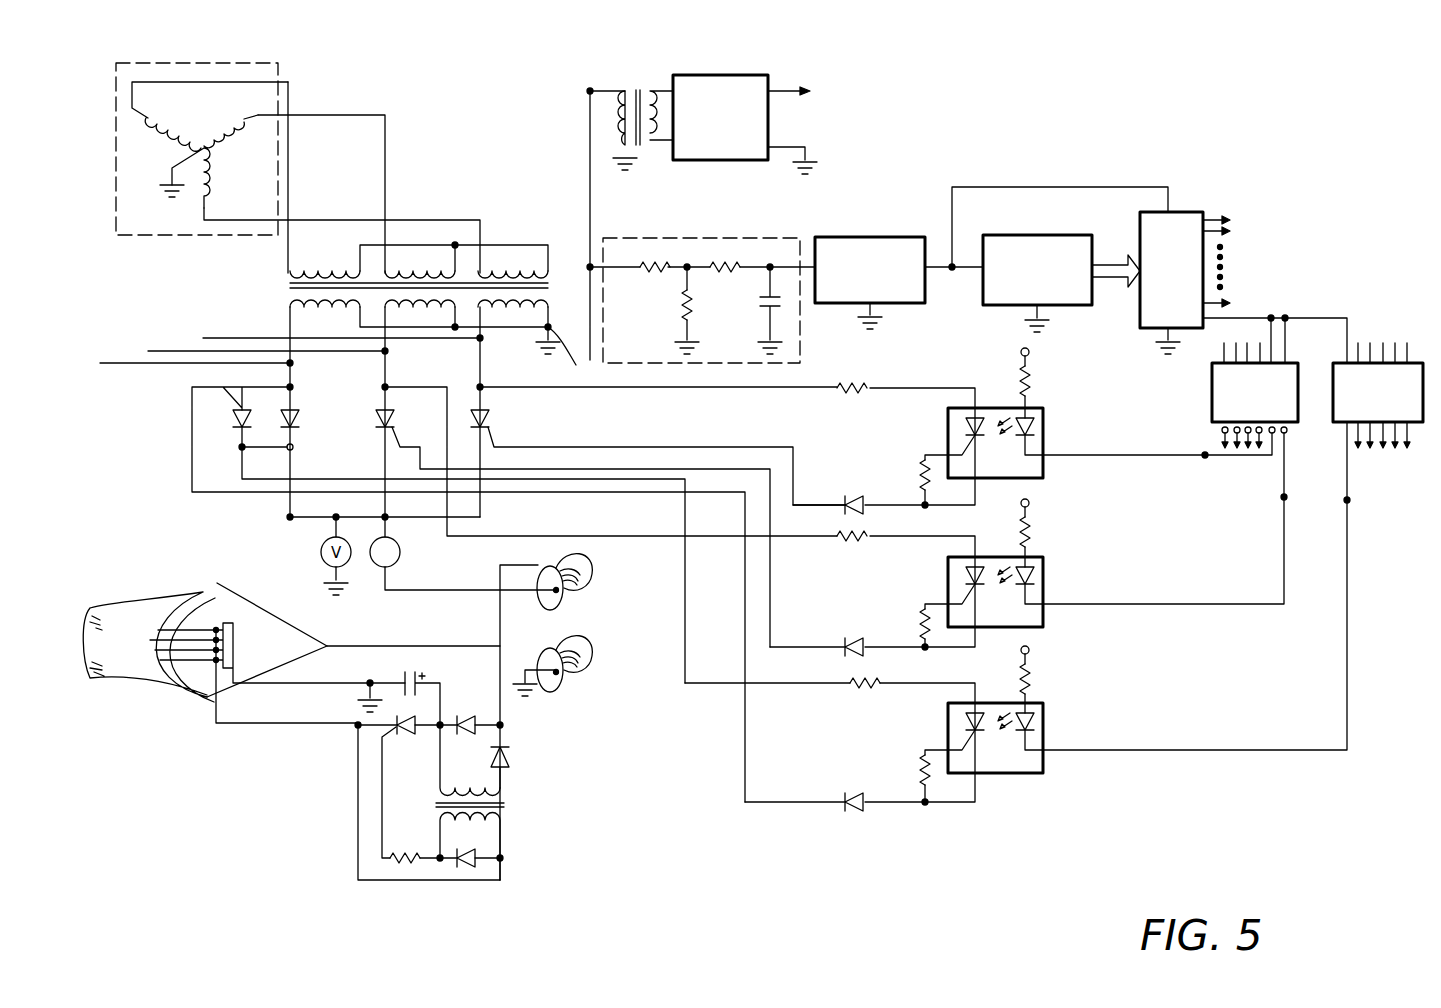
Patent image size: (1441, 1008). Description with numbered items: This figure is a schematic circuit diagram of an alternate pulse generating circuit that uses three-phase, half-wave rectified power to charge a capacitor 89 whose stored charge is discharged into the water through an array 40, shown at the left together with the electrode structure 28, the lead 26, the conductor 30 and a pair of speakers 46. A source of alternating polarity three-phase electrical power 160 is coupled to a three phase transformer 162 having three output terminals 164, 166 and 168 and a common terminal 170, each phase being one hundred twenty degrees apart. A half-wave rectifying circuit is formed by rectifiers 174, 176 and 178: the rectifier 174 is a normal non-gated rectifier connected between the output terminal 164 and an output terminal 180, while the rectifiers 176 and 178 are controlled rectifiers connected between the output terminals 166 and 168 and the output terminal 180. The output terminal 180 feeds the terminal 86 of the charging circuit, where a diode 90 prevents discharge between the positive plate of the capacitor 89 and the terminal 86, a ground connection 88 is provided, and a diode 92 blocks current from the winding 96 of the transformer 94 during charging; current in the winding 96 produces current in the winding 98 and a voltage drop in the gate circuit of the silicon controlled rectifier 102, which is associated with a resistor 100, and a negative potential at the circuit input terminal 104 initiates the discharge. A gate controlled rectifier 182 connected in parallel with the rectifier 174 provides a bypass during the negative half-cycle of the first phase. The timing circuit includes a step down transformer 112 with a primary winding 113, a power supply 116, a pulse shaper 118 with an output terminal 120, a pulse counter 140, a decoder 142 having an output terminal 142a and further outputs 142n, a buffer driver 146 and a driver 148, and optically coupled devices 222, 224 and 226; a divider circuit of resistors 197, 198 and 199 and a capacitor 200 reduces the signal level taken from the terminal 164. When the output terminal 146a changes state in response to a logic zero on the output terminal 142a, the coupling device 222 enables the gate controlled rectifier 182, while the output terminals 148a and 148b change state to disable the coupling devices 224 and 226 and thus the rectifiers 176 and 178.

The lower electrode lead 26 is at (276, 648).
The electrode assembly 28 is at (240, 596).
The conductor 30 is at (470, 646).
The array 40 is at (186, 625).
The speaker 46 is at (500, 565).
The terminal 86 is at (505, 725).
The ground connection 88 is at (371, 680).
The capacitor 89 is at (418, 670).
The diode 90 is at (478, 694).
The diode 92 is at (512, 760).
The transformer 94 is at (506, 804).
The primary winding 96 is at (472, 788).
The secondary winding 98 is at (468, 818).
The resistor 100 is at (409, 849).
The silicon controlled rectifier 102 is at (412, 735).
The circuit input terminal 104 is at (357, 728).
The step down transformer 112 is at (636, 80).
The primary winding 113 is at (590, 91).
The power supply 116 is at (740, 73).
The pulse shaper 118 is at (868, 235).
The output terminal 120 is at (952, 272).
The pulse counter 140 is at (1038, 233).
The decoder 142 is at (1243, 262).
The decoder output 142n is at (1232, 220).
The output terminal 142a is at (1228, 318).
The buffer driver 146 is at (1417, 352).
The output terminal 146a is at (1349, 498).
The driver 148 is at (1292, 352).
The output terminal 148a is at (1282, 497).
The output terminal 148b is at (1204, 452).
The source of alternating polarity three-phase electrical power 160 is at (280, 76).
The three phase transformer 162 is at (288, 284).
The output terminal 164 is at (292, 366).
The output terminal 166 is at (388, 351).
The output terminal 168 is at (483, 340).
The common terminal 170 is at (579, 238).
The half-wave rectifier 174 is at (300, 421).
The half-wave rectifier 176 is at (392, 414).
The half-wave rectifier 178 is at (490, 420).
The output terminal 180 is at (390, 520).
The gate controlled rectifier 182 is at (236, 418).
The resistor 197 is at (651, 262).
The resistor 198 is at (686, 308).
The resistor 199 is at (730, 262).
The capacitor 200 is at (770, 297).
The coupling device 222 is at (1043, 714).
The coupling device 224 is at (1043, 580).
The coupling device 226 is at (1043, 430).